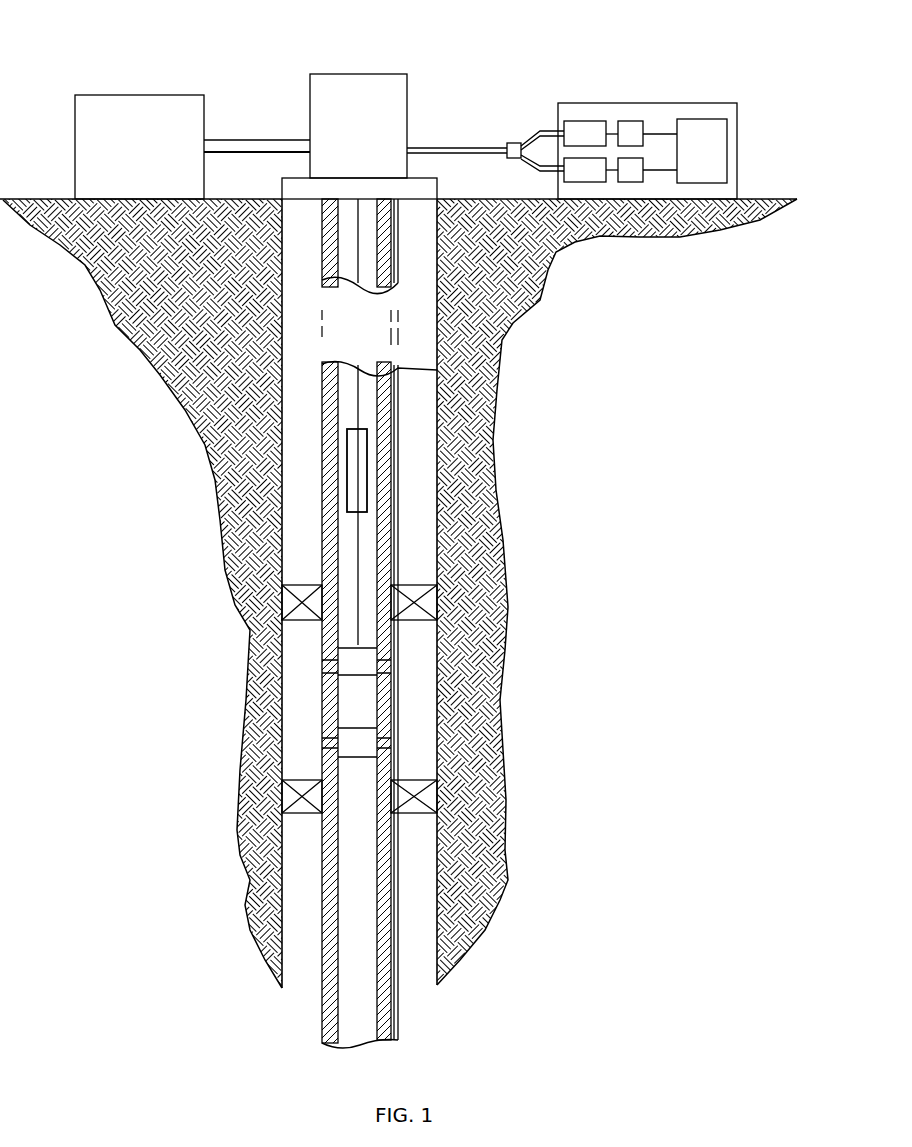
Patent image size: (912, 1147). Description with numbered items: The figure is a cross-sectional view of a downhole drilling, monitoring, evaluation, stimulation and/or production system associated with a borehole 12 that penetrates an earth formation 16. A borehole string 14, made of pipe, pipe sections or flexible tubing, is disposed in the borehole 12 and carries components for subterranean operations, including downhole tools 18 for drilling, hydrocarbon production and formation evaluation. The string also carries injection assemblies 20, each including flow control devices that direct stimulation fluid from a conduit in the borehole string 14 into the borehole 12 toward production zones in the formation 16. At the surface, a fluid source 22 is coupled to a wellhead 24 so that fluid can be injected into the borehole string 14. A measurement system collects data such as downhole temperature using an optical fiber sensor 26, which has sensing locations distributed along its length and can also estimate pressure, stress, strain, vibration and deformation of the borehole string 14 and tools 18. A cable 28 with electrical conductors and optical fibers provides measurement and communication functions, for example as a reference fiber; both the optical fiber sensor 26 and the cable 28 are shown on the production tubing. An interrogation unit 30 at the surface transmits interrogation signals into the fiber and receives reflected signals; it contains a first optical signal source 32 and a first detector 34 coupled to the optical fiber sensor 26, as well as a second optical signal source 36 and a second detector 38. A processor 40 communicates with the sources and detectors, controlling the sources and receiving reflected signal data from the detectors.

The borehole 12 is at (423, 513).
The borehole string 14 is at (417, 445).
The earth formation 16 is at (190, 330).
The downhole tool 18 is at (312, 705).
The injection assembly 20 is at (347, 655).
The fluid source 22 is at (102, 103).
The wellhead 24 is at (357, 82).
The optical fiber sensor 26 is at (440, 153).
The cable 28 is at (398, 265).
The interrogation unit 30 is at (683, 103).
The first optical signal source 32 is at (587, 128).
The first detector 34 is at (632, 128).
The second optical signal source 36 is at (590, 175).
The second detector 38 is at (633, 180).
The processor 40 is at (715, 140).